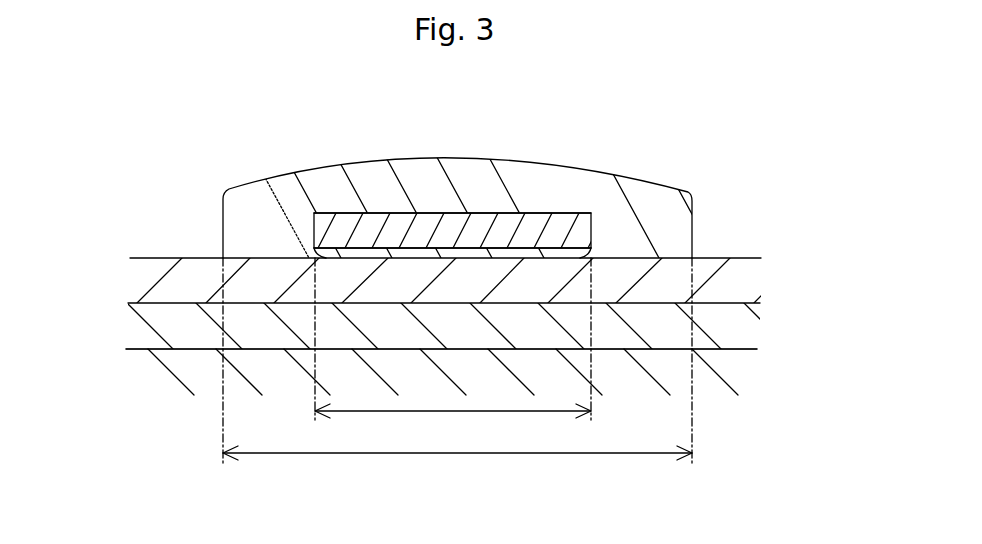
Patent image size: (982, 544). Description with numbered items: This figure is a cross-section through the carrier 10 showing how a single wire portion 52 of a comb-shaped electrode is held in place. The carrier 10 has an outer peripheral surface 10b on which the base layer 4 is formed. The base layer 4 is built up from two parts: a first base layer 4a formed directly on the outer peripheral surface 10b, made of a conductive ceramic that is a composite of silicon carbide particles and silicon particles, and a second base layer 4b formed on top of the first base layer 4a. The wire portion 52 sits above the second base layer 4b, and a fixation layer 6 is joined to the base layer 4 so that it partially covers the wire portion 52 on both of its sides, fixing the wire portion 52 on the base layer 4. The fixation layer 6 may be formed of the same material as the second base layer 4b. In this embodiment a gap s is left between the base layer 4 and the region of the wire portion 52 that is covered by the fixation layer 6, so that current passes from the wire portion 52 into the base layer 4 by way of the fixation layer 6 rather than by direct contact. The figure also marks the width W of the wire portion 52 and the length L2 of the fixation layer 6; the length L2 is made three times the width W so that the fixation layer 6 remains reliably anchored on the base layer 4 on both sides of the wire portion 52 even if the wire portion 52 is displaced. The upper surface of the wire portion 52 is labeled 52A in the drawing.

The fixation layer 6 is at (687, 220).
The wire portion 52 is at (552, 228).
The upper surface of electronic component 52A is at (370, 233).
The gap s is at (470, 245).
The base layer 4 is at (491, 302).
The first base layer 4a is at (468, 326).
The second base layer 4b is at (737, 277).
The carrier 10 is at (150, 375).
The outer peripheral surface 10b is at (130, 348).
The width of wire portion W is at (453, 405).
The length of second side L2 is at (457, 447).